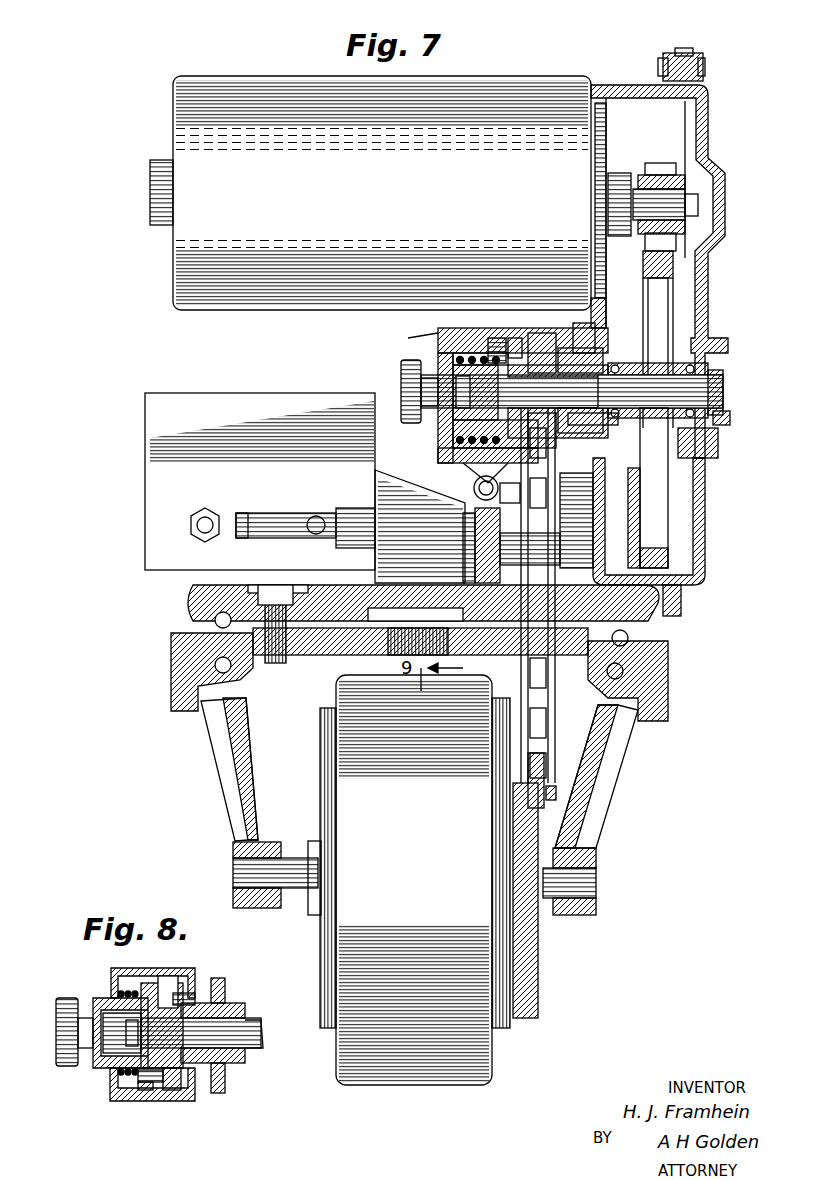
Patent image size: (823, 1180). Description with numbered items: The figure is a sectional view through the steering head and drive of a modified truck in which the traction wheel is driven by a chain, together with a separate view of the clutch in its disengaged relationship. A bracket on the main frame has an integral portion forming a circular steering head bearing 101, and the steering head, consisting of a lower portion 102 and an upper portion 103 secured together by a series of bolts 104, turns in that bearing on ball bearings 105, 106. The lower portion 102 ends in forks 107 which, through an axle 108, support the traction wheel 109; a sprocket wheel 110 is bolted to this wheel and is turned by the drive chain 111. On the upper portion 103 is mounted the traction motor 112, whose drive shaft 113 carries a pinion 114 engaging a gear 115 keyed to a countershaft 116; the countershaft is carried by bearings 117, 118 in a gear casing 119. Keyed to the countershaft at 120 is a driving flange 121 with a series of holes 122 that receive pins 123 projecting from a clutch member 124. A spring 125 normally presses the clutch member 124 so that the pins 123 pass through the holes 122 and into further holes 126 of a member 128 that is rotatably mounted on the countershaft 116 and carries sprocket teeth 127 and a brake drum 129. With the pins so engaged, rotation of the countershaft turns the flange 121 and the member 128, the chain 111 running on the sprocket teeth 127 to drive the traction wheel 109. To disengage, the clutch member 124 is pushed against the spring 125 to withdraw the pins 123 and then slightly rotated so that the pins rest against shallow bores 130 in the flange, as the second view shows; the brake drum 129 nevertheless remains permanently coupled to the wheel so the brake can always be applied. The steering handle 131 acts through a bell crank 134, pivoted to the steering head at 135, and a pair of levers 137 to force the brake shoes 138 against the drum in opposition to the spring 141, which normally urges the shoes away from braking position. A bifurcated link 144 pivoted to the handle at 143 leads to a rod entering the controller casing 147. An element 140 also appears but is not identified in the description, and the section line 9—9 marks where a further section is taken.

In FIG. 7, the housing frame 9 is at (677, 137).
In FIG. 7, the steering head bearing 101 is at (660, 648).
In FIG. 7, the lower portion of steering head 102 is at (660, 683).
In FIG. 7, the upper portion of steering head 103 is at (673, 595).
In FIG. 7, the bolts 104 is at (257, 605).
In FIG. 7, the ball bearing 105 is at (645, 615).
In FIG. 7, the ball bearing 106 is at (615, 665).
In FIG. 7, the forks 107 is at (235, 780).
In FIG. 7, the axle 108 is at (570, 870).
In FIG. 7, the traction wheel 109 is at (425, 873).
In FIG. 7, the sprocket wheel 110 is at (545, 772).
In FIG. 7, the drive chain 111 is at (545, 735).
In FIG. 7, the traction motor 112 is at (385, 173).
In FIG. 7, the drive shaft 113 is at (690, 183).
In FIG. 7, the pinion 114 is at (645, 155).
In FIG. 7, the gear 115 is at (665, 248).
In FIG. 7, the countershaft 116 is at (700, 380).
In FIG. 8, the countershaft 116 is at (245, 1045).
In FIG. 7, the bearing 117 is at (712, 428).
In FIG. 7, the bearing 118 is at (645, 440).
In FIG. 7, the gear casing 119 is at (697, 495).
In FIG. 7, the key 120 is at (430, 383).
In FIG. 8, the key 120 is at (148, 1010).
In FIG. 7, the driving flange 121 is at (508, 330).
In FIG. 8, the driving flange 121 is at (172, 978).
In FIG. 7, the holes 122 is at (492, 330).
In FIG. 8, the holes 122 is at (178, 988).
In FIG. 7, the pins 123 is at (455, 346).
In FIG. 8, the pins 123 is at (150, 1082).
In FIG. 7, the clutch member 124 is at (393, 360).
In FIG. 8, the clutch member 124 is at (60, 990).
In FIG. 7, the spring 125 is at (445, 350).
In FIG. 8, the spring 125 is at (105, 1070).
In FIG. 7, the holes 126 is at (530, 330).
In FIG. 8, the holes 126 is at (208, 975).
In FIG. 7, the sprocket teeth 127 is at (585, 320).
In FIG. 7, the member 128 is at (575, 332).
In FIG. 8, the member 128 is at (185, 1090).
In FIG. 7, the brake drum 129 is at (430, 333).
In FIG. 8, the brake drum 129 is at (120, 960).
In FIG. 7, the shallow bores 130 is at (470, 440).
In FIG. 8, the shallow bores 130 is at (178, 1090).
In FIG. 7, the steering handle 131 is at (367, 488).
In FIG. 7, the bell crank 134 is at (467, 525).
In FIG. 7, the pivot 135 is at (455, 552).
In FIG. 7, the levers 137 is at (455, 508).
In FIG. 7, the brake shoes 138 is at (465, 460).
In FIG. 7, the cover 140 is at (400, 330).
In FIG. 7, the spring 141 is at (466, 482).
In FIG. 7, the pivot 143 is at (212, 506).
In FIG. 7, the bifurcated link 144 is at (252, 505).
In FIG. 7, the controller casing 147 is at (137, 478).